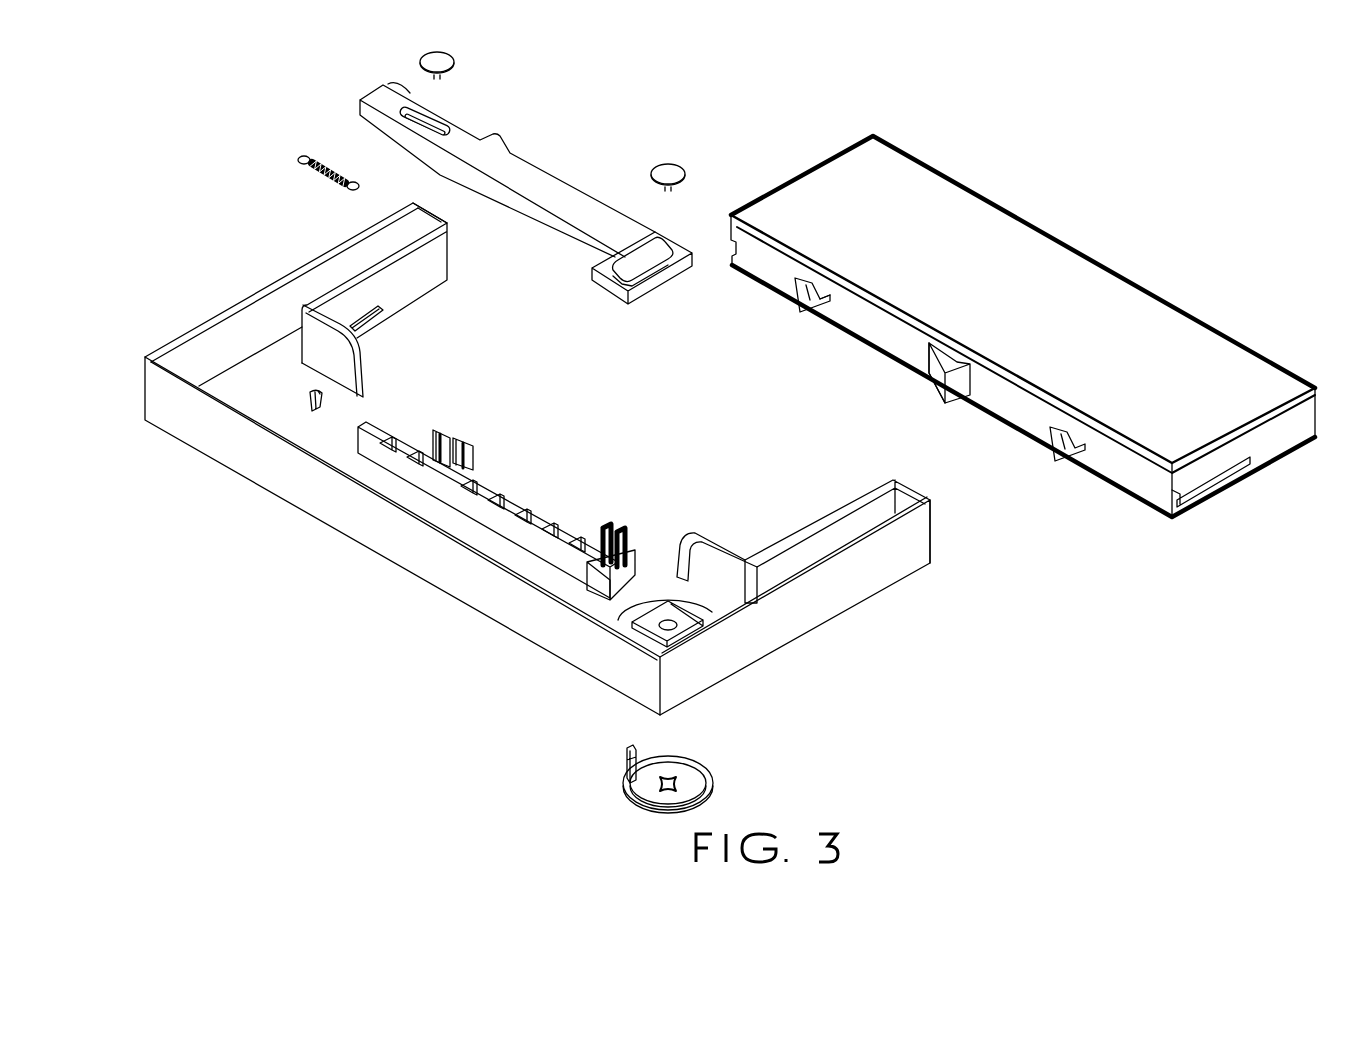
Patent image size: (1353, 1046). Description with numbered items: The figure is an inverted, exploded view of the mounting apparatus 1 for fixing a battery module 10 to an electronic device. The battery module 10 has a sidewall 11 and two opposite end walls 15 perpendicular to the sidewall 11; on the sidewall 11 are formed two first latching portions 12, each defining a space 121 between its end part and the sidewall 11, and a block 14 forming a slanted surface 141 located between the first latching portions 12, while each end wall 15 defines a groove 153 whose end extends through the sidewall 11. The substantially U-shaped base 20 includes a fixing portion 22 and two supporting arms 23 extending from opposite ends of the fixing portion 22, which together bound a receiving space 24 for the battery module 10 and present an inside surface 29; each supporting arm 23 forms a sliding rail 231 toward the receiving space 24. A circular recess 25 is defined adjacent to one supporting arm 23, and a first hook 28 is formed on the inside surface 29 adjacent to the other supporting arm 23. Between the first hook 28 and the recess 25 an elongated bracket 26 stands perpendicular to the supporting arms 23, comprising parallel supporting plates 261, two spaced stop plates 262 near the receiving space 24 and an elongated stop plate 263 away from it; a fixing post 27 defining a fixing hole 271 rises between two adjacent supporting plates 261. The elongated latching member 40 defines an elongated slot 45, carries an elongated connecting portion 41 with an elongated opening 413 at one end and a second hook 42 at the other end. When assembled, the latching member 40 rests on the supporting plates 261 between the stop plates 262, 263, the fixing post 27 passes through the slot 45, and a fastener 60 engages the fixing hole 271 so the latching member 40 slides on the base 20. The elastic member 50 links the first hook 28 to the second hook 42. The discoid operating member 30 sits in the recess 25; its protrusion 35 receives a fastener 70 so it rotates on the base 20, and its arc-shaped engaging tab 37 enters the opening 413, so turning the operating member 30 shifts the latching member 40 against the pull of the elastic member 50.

The mounting apparatus 1 is at (218, 137).
The battery module 10 is at (1180, 330).
The sidewall 11 is at (1105, 472).
The first latching portion 12 is at (808, 302).
The space 121 is at (822, 315).
The block 14 is at (958, 375).
The slanted surface 141 is at (940, 370).
The end wall 15 is at (1272, 447).
The groove 153 is at (1205, 480).
The base 20 is at (890, 628).
The fixing portion 22 is at (613, 612).
The supporting arm 23 is at (340, 270).
The sliding rail 231 is at (372, 318).
The receiving space 24 is at (813, 488).
The circular recess 25 is at (690, 632).
The bracket 26 is at (496, 577).
The supporting plate 261 is at (557, 492).
The stop plate 262 is at (592, 562).
The elongated stop plate 263 is at (520, 514).
The fixing post 27 is at (487, 515).
The fixing hole 271 is at (438, 457).
The first hook 28 is at (308, 402).
The inside surface 29 is at (655, 575).
The operating member 30 is at (670, 764).
The protrusion 35 is at (672, 781).
The engaging tab 37 is at (617, 752).
The latching member 40 is at (530, 175).
The connecting portion 41 is at (660, 252).
The opening 413 is at (633, 265).
The second hook 42 is at (360, 97).
The slot 45 is at (435, 119).
The elastic member 50 is at (307, 173).
The fastener 60 is at (455, 60).
The fastener 70 is at (672, 170).